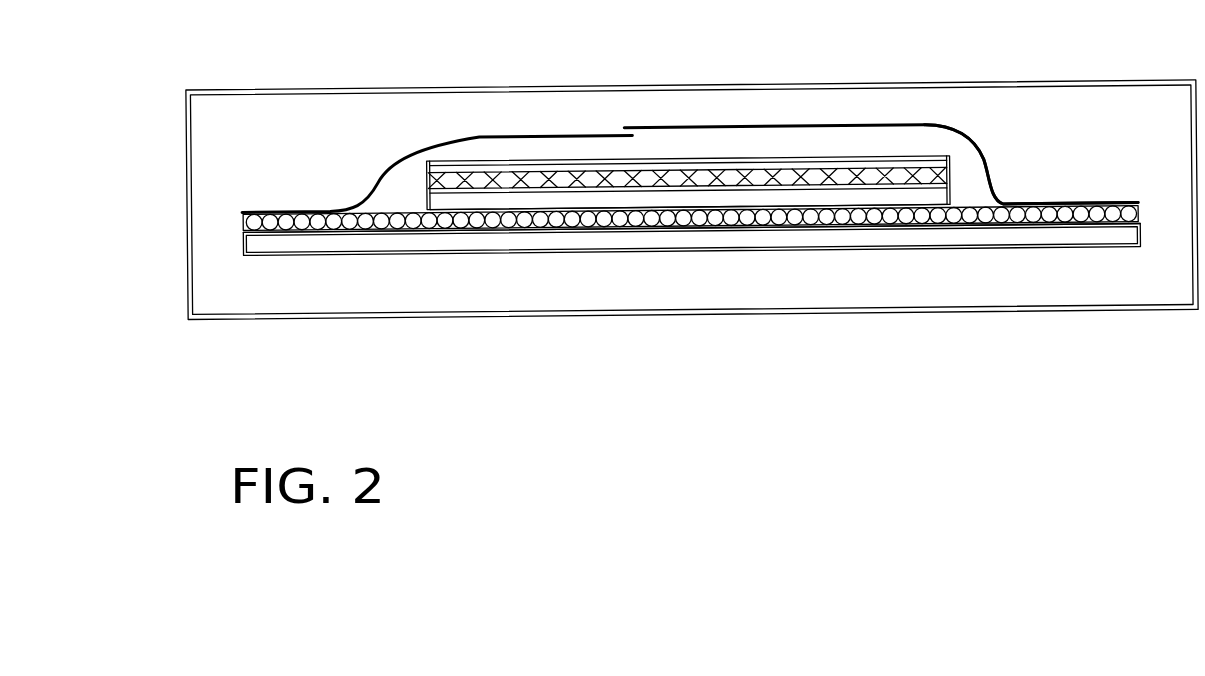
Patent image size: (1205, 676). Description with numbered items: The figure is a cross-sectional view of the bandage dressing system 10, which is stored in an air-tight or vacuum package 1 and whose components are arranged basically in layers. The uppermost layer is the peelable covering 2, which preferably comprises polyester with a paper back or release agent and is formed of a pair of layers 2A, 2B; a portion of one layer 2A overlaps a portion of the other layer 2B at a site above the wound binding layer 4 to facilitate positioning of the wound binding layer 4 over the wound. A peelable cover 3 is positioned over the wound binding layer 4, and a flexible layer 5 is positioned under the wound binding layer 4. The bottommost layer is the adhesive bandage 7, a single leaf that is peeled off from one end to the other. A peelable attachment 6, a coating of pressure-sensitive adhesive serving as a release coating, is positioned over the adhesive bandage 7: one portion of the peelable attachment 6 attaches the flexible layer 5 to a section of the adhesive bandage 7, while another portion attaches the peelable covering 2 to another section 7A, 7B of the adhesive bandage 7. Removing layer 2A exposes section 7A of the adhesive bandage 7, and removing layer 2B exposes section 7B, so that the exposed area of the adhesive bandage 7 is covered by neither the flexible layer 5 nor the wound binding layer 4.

The package 1 is at (192, 136).
The peelable covering 2 is at (975, 136).
The layer 2A is at (730, 127).
The layer 2B is at (540, 134).
The peelable cover 3 is at (950, 162).
The wound binding layer 4 is at (427, 174).
The flexible layer 5 is at (430, 193).
The peelable attachment 6 is at (243, 217).
The adhesive bandage 7 is at (1142, 238).
The section 7A is at (1085, 236).
The section 7B is at (312, 249).
The bandage dressing system 10 is at (533, 248).